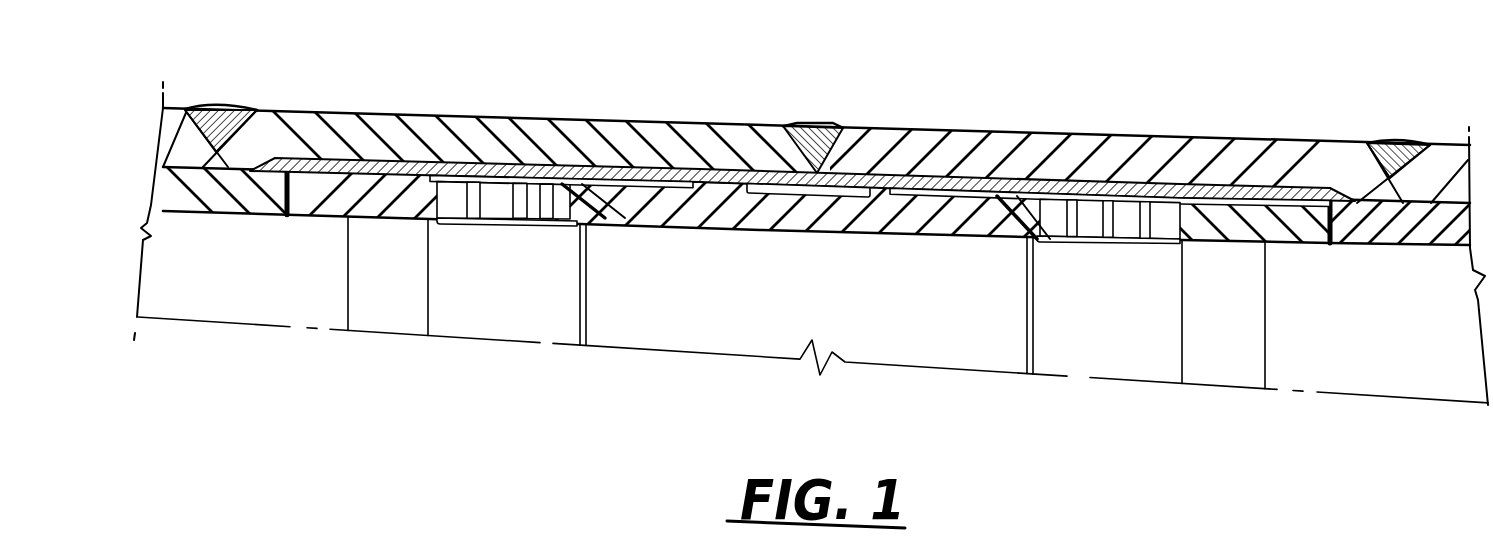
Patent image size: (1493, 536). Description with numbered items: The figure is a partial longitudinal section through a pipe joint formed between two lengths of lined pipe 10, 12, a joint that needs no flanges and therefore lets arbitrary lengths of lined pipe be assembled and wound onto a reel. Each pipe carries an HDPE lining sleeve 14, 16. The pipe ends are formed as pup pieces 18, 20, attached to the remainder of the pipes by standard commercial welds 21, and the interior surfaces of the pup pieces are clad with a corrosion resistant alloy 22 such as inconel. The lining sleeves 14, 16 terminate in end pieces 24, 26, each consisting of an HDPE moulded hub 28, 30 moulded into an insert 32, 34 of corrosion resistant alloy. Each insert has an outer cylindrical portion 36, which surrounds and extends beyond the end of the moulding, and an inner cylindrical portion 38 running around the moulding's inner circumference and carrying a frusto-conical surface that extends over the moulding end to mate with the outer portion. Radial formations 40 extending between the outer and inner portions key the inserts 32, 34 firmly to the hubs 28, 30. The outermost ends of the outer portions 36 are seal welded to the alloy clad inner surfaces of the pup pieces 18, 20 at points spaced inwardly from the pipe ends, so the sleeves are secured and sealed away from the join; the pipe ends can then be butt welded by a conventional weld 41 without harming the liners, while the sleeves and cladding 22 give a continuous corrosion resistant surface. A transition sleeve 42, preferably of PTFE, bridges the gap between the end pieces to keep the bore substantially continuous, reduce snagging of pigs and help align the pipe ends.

The pipe 10 is at (172, 112).
The pipe 12 is at (1449, 147).
The lining sleeve 14 is at (258, 206).
The lining sleeve 16 is at (1395, 235).
The pup piece 18 is at (456, 122).
The pup piece 20 is at (1100, 142).
The weld 21 is at (230, 113).
The corrosion resistant alloy cladding 22 is at (569, 170).
The end piece 24 is at (358, 180).
The end piece 26 is at (1247, 212).
The HDPE moulded hub 28 is at (366, 218).
The HDPE moulded hub 30 is at (1283, 234).
The insert 32 is at (508, 236).
The insert 34 is at (1114, 248).
The outer cylindrical portion 36 is at (497, 178).
The inner cylindrical portion 38 is at (544, 232).
The radial formation 40 is at (478, 222).
The weld 41 is at (806, 126).
The transition sleeve 42 is at (762, 232).